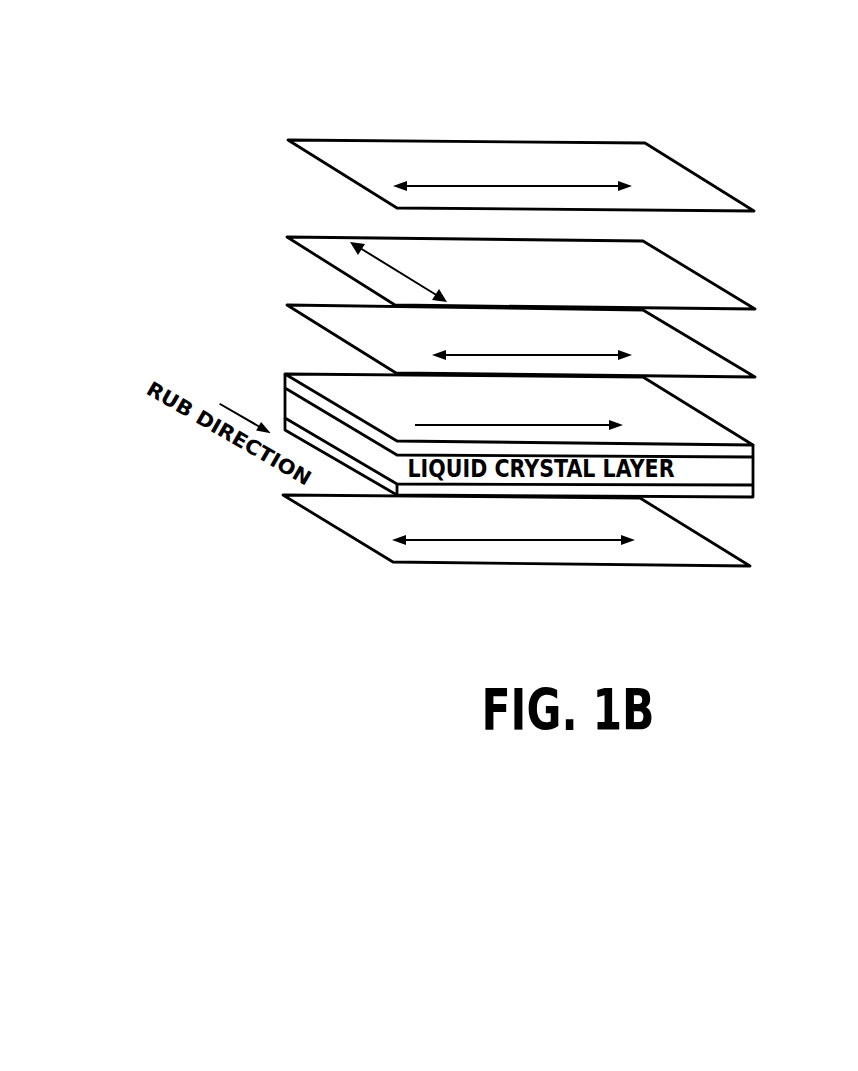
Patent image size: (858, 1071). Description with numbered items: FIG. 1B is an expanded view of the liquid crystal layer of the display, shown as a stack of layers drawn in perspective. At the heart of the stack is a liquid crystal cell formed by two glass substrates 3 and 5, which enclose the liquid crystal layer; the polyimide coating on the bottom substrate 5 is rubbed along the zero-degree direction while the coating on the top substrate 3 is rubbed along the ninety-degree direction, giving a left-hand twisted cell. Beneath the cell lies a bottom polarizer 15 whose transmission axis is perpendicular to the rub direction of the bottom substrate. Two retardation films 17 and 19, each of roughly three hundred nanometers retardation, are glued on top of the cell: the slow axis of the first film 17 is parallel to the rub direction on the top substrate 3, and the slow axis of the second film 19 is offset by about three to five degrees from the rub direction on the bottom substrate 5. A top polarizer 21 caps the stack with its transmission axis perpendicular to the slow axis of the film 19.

The top polarizer 21 is at (713, 200).
The second retardation film 19 is at (707, 295).
The first retardation film 17 is at (725, 373).
The top glass substrate 3 is at (740, 454).
The bottom glass substrate 5 is at (737, 492).
The bottom polarizer 15 is at (548, 557).